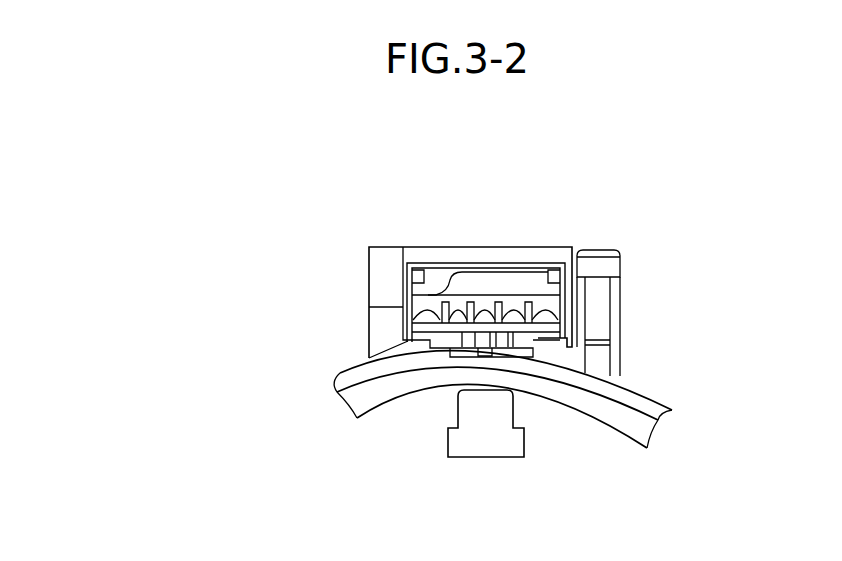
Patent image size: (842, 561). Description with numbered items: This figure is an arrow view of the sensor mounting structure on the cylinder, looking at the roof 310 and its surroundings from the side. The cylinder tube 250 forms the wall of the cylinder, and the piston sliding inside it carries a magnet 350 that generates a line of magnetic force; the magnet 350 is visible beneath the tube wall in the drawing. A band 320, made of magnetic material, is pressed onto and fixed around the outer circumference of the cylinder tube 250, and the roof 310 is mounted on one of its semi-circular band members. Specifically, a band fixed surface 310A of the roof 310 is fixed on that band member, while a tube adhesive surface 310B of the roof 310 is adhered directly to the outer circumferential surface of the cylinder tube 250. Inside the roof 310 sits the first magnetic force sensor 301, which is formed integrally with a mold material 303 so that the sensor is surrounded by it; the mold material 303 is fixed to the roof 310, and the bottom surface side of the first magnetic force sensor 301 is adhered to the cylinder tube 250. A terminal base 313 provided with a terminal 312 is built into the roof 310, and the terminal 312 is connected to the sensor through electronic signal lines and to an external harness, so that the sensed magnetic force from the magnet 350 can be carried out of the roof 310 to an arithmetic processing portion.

The first magnetic force sensor 301 is at (489, 348).
The roof 310 is at (408, 273).
The terminal 312 is at (514, 302).
The terminal base 313 is at (550, 330).
The mold material 303 is at (410, 348).
The band 320 is at (360, 374).
The band fixed surface 310A is at (545, 355).
The tube adhesive surface 310B is at (575, 373).
The magnet 350 is at (460, 447).
The cylinder tube 250 is at (620, 410).